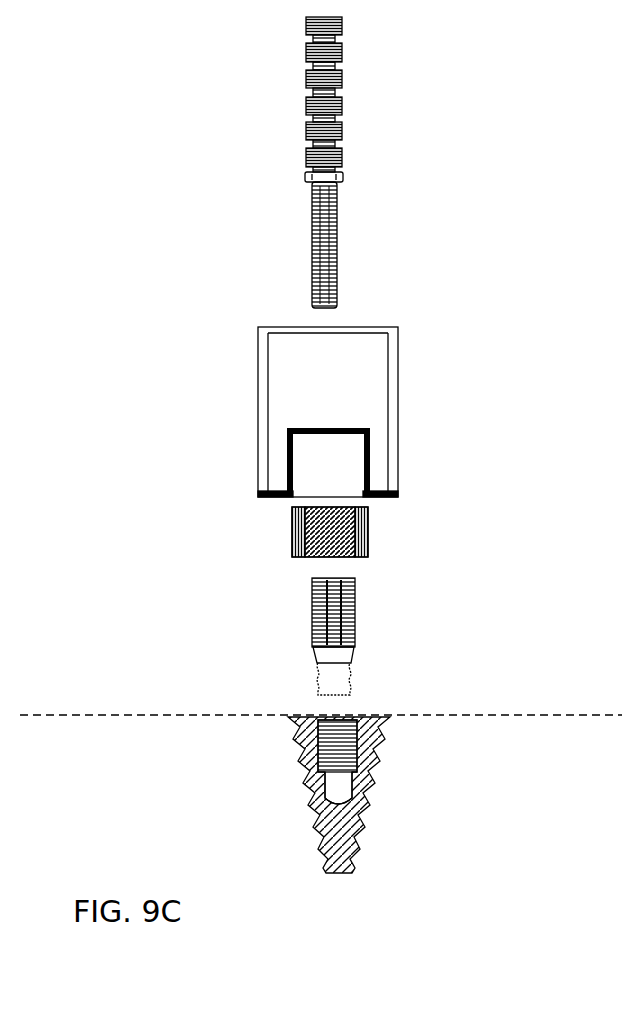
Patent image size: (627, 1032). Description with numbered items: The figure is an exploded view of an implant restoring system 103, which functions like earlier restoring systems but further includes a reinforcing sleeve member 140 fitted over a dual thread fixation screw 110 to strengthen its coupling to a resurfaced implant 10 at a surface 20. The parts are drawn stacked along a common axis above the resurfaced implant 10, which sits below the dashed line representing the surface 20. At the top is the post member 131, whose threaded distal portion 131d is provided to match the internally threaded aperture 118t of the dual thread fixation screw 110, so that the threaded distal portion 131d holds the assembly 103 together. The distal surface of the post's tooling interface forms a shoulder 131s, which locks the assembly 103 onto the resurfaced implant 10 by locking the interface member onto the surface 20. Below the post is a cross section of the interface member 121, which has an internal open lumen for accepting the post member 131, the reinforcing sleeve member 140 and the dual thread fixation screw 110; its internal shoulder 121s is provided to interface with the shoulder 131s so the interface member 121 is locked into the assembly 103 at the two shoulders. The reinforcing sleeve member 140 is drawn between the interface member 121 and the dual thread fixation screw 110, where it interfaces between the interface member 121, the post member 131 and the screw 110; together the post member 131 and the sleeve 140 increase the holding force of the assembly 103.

The implant restoring system 103 is at (160, 230).
The post member 131 is at (347, 162).
The shoulder 131s is at (305, 178).
The threaded distal portion 131d is at (348, 252).
The interface member 121 is at (341, 412).
The internal shoulder 121s is at (305, 429).
The reinforcing sleeve member 140 is at (384, 528).
The dual thread fixation screw 110 is at (349, 634).
The internally threaded aperture 118t is at (313, 600).
The resurfaced implant 10 is at (383, 805).
The surface 20 is at (82, 715).